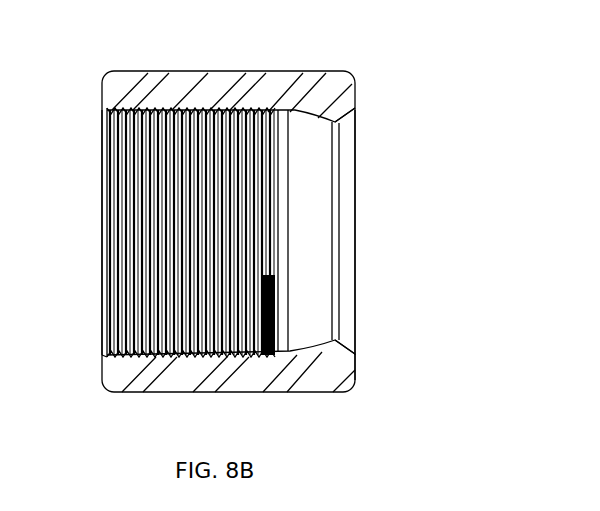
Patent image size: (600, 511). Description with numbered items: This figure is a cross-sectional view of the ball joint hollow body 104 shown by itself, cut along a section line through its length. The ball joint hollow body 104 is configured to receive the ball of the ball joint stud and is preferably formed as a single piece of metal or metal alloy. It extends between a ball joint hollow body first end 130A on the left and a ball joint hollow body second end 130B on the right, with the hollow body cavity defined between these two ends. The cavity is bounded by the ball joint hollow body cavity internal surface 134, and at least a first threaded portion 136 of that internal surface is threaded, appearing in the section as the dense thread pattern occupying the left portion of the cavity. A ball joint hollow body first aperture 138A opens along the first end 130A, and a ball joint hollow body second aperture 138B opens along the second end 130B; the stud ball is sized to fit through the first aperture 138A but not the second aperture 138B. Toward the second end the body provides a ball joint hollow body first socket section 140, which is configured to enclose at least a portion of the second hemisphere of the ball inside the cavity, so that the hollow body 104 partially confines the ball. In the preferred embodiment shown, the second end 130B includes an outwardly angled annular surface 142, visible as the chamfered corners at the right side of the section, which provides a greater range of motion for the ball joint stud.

The ball joint hollow body 104 is at (220, 87).
The ball joint hollow body cavity internal surface 134 is at (167, 137).
The first threaded portion 136 is at (137, 172).
The ball joint hollow body first socket section 140 is at (308, 125).
The outwardly angled annular surface 142 is at (343, 121).
The ball joint hollow body first aperture 138A is at (102, 265).
The ball joint hollow body second aperture 138B is at (355, 272).
The ball joint hollow body first end 130A is at (103, 370).
The ball joint hollow body second end 130B is at (353, 372).